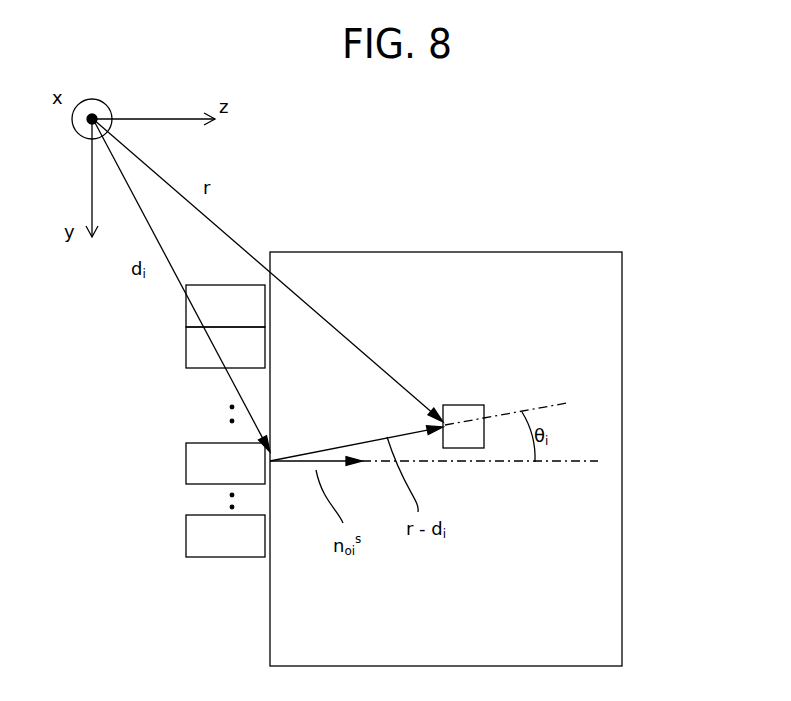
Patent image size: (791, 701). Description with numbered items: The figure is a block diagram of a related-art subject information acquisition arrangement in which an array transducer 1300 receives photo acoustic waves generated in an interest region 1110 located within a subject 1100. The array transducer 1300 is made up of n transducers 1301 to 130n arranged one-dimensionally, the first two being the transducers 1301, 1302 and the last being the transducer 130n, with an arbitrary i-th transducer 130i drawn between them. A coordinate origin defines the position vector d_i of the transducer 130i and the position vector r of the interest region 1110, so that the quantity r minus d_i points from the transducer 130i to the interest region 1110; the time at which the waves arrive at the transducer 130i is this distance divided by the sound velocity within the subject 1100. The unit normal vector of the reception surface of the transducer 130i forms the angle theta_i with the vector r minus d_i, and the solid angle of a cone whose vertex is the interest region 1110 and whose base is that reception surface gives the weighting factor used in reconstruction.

The array transducer 1300 is at (168, 278).
The transducer 1301 is at (225, 306).
The transducer 1302 is at (225, 347).
The transducer 130i is at (225, 463).
The transducer 130n is at (225, 536).
The interest region 1110 is at (482, 405).
The subject 1100 is at (617, 632).